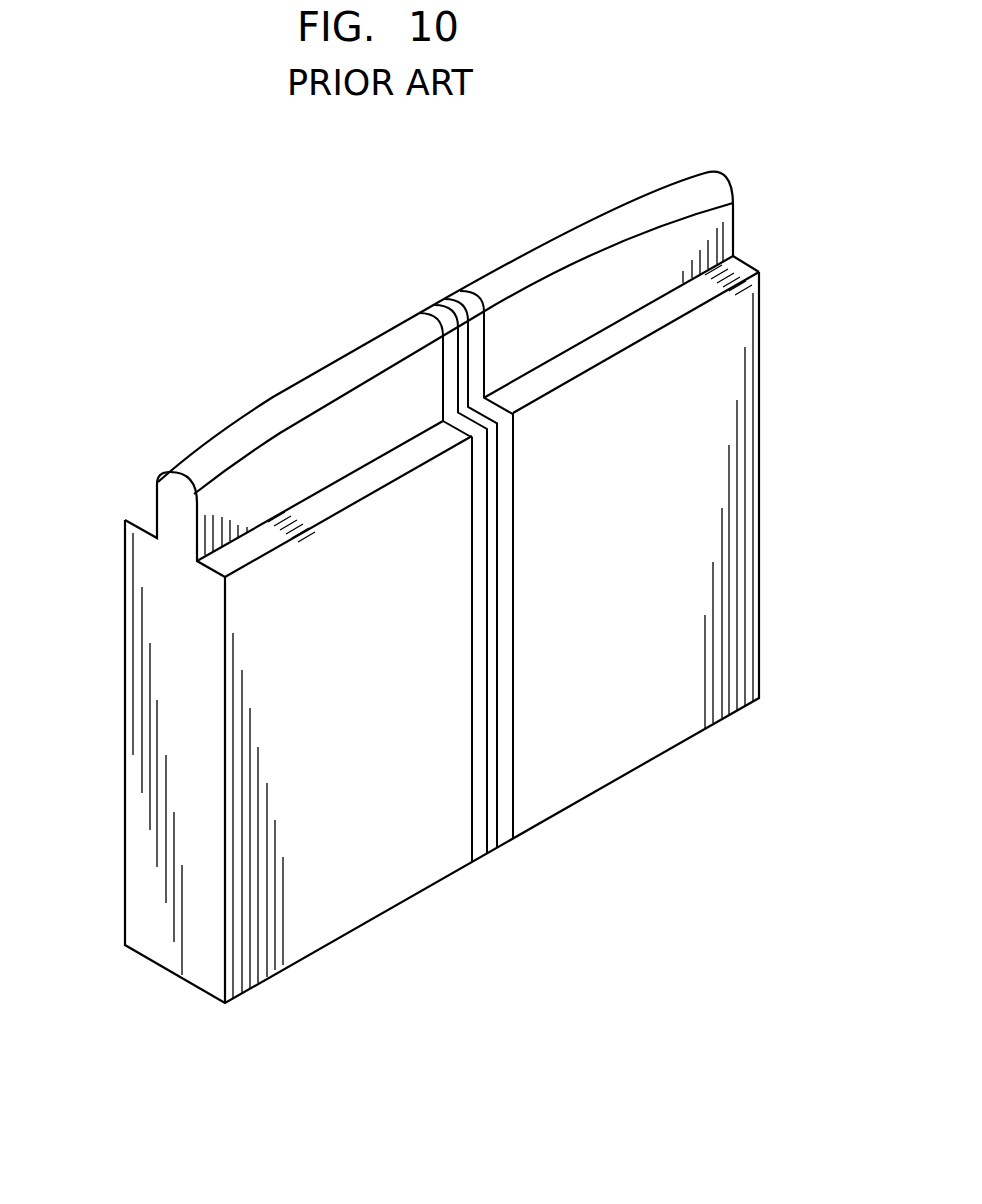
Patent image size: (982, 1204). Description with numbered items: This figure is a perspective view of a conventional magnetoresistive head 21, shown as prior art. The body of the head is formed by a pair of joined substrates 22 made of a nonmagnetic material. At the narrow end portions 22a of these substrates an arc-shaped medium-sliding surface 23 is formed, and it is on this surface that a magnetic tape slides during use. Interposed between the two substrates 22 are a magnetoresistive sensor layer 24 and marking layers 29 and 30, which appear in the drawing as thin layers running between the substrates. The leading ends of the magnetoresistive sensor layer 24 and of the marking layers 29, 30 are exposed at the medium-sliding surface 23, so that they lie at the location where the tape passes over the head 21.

The magnetoresistive head 21 is at (172, 347).
The substrates 22 is at (761, 499).
The narrow end portions 22a is at (730, 236).
The medium-sliding surface 23 is at (276, 398).
The magnetoresistive sensor layer 24 is at (425, 305).
The marking layer 29 is at (446, 306).
The marking layer 30 is at (438, 312).